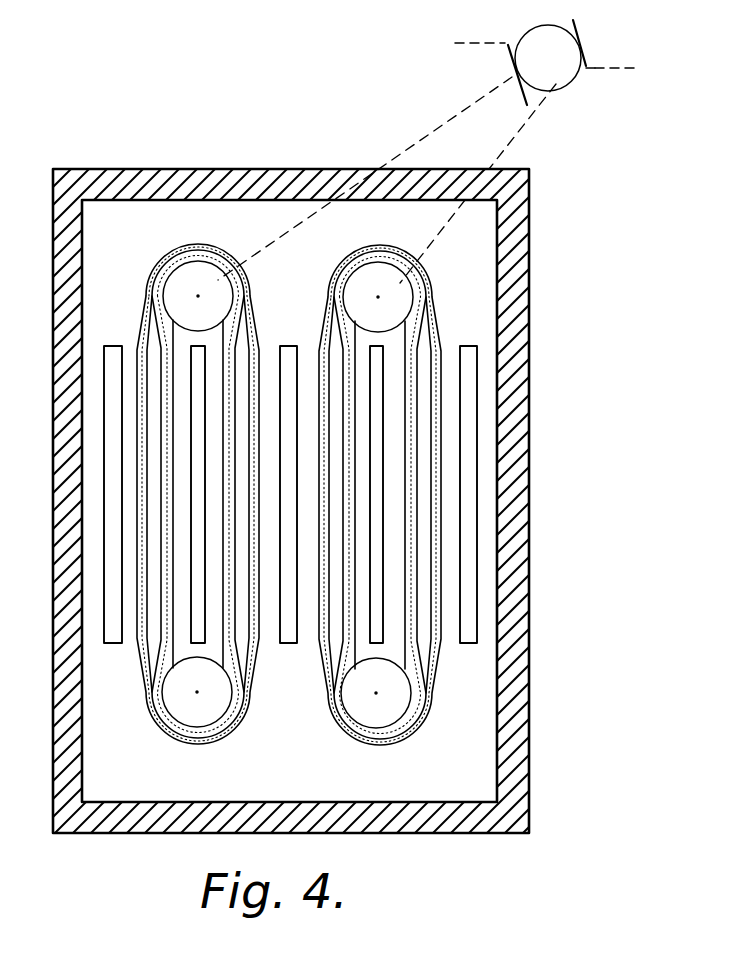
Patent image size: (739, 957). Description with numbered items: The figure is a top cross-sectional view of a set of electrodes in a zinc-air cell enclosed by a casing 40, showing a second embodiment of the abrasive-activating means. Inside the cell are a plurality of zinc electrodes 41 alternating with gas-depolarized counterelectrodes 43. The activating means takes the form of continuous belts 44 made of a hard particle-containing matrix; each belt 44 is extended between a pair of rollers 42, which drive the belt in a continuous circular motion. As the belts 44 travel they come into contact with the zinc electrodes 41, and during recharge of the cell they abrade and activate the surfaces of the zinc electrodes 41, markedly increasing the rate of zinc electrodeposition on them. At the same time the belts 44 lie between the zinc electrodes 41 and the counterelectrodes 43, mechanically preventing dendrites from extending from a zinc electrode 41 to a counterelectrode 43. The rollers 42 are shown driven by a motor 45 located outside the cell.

The casing 40 is at (530, 768).
The zinc electrode 41 is at (238, 448).
The roller 42 is at (196, 267).
The gas-depolarized counterelectrode 43 is at (201, 394).
The continuous belt 44 is at (233, 675).
The motor 45 is at (573, 75).